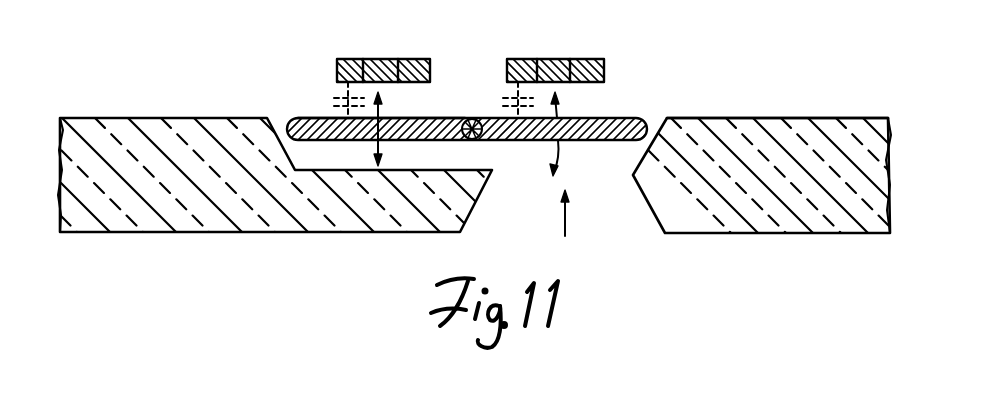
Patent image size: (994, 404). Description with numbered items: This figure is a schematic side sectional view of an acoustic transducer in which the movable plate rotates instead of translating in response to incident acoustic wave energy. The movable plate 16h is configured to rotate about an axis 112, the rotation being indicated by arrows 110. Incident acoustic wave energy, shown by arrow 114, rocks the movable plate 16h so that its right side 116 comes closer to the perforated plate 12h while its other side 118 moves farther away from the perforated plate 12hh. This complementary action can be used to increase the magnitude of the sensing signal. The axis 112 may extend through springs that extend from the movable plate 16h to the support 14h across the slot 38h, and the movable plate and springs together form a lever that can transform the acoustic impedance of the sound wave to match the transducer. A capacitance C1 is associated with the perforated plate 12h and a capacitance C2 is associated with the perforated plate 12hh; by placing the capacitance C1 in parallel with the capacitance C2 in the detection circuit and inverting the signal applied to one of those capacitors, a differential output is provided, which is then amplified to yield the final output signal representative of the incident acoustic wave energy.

The perforated plate 12h is at (553, 59).
The perforated plate 12hh is at (380, 59).
The support 14h is at (748, 233).
The movable plate 16h is at (645, 116).
The slot 38h is at (282, 128).
The arrows 110 is at (375, 149).
The axis 112 is at (490, 141).
The incident acoustic wave energy 114 is at (565, 219).
The right side 116 is at (624, 117).
The other side 118 is at (313, 118).
The capacitance C1 is at (508, 94).
The capacitance C2 is at (339, 94).